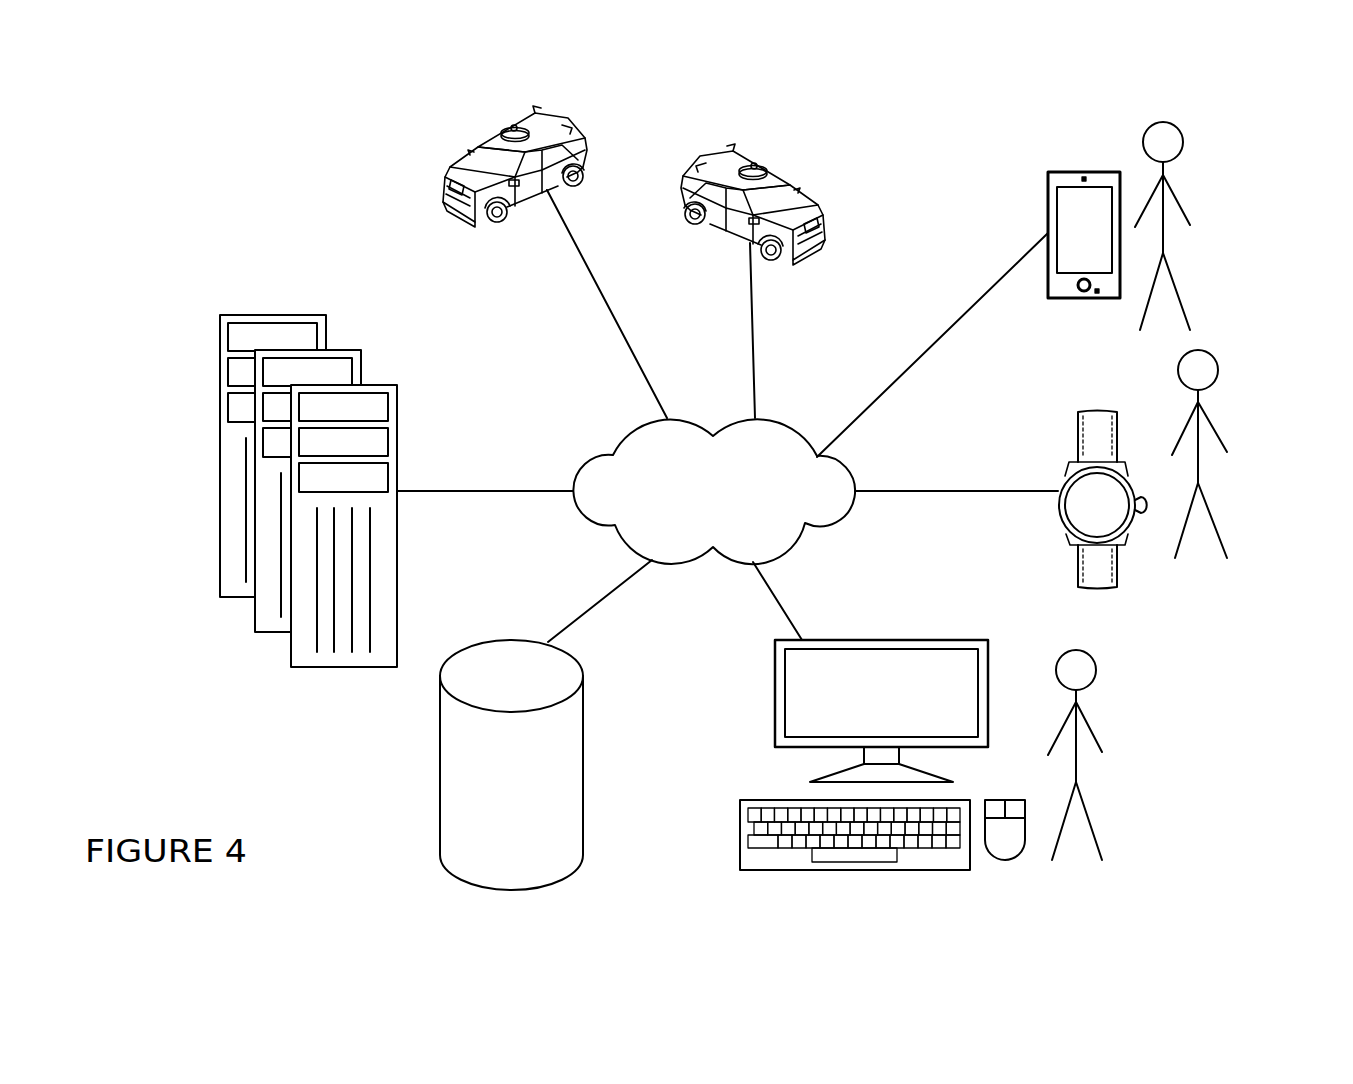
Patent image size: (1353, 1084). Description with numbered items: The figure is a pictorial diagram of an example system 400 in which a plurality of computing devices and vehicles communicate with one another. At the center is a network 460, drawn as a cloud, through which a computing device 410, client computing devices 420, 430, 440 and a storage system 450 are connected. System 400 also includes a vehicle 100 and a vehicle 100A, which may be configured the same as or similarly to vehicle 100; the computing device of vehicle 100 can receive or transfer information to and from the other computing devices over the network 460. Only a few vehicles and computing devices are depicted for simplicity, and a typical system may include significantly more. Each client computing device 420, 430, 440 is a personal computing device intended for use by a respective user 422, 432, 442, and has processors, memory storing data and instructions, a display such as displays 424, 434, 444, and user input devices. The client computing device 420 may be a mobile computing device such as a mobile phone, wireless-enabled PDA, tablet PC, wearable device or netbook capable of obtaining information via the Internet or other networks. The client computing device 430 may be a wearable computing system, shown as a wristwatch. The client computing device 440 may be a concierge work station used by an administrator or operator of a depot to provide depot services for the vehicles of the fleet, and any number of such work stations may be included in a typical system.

The system 400 is at (187, 808).
The vehicle 100 is at (440, 196).
The vehicle 100A is at (823, 223).
The computing device 410 is at (397, 428).
The client computing device 420 is at (1036, 245).
The user 422 is at (1167, 237).
The display 424 is at (1057, 187).
The client computing device 430 is at (1059, 508).
The user 432 is at (1200, 465).
The display 434 is at (1132, 515).
The client computing device 440 is at (909, 719).
The user 442 is at (1078, 766).
The display 444 is at (978, 667).
The storage system 450 is at (583, 773).
The network 460 is at (583, 518).